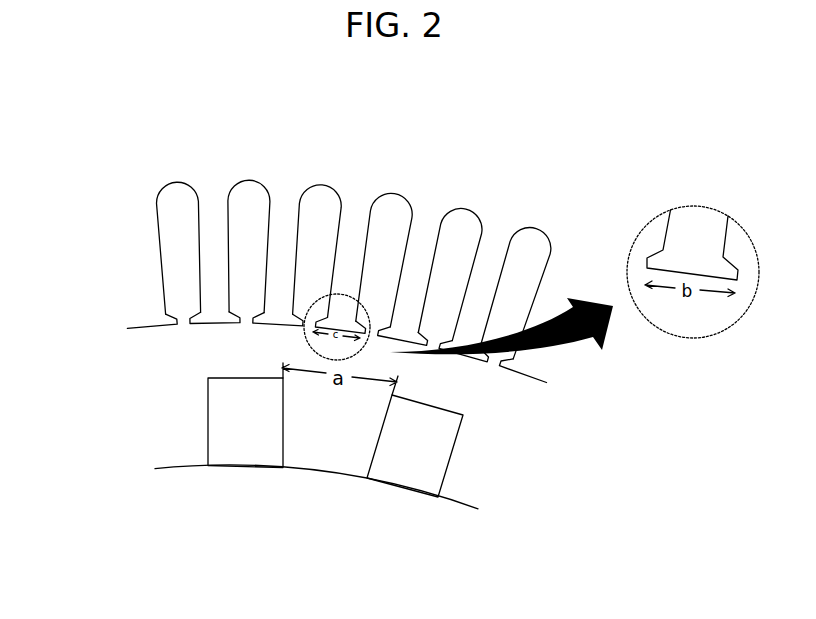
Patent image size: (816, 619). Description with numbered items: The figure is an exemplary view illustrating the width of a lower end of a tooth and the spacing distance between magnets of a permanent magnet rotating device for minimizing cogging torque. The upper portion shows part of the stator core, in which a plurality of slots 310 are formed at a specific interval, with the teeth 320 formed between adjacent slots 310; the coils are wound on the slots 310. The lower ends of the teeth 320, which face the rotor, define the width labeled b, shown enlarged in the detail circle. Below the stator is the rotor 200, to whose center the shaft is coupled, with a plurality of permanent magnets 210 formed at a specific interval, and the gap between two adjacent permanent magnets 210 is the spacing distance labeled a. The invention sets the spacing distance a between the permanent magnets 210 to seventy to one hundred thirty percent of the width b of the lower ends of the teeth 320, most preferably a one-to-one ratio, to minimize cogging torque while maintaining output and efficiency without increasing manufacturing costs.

The rotor 200 is at (187, 468).
The permanent magnet 210 is at (440, 450).
The slot 310 is at (320, 205).
The tooth 320 is at (277, 247).